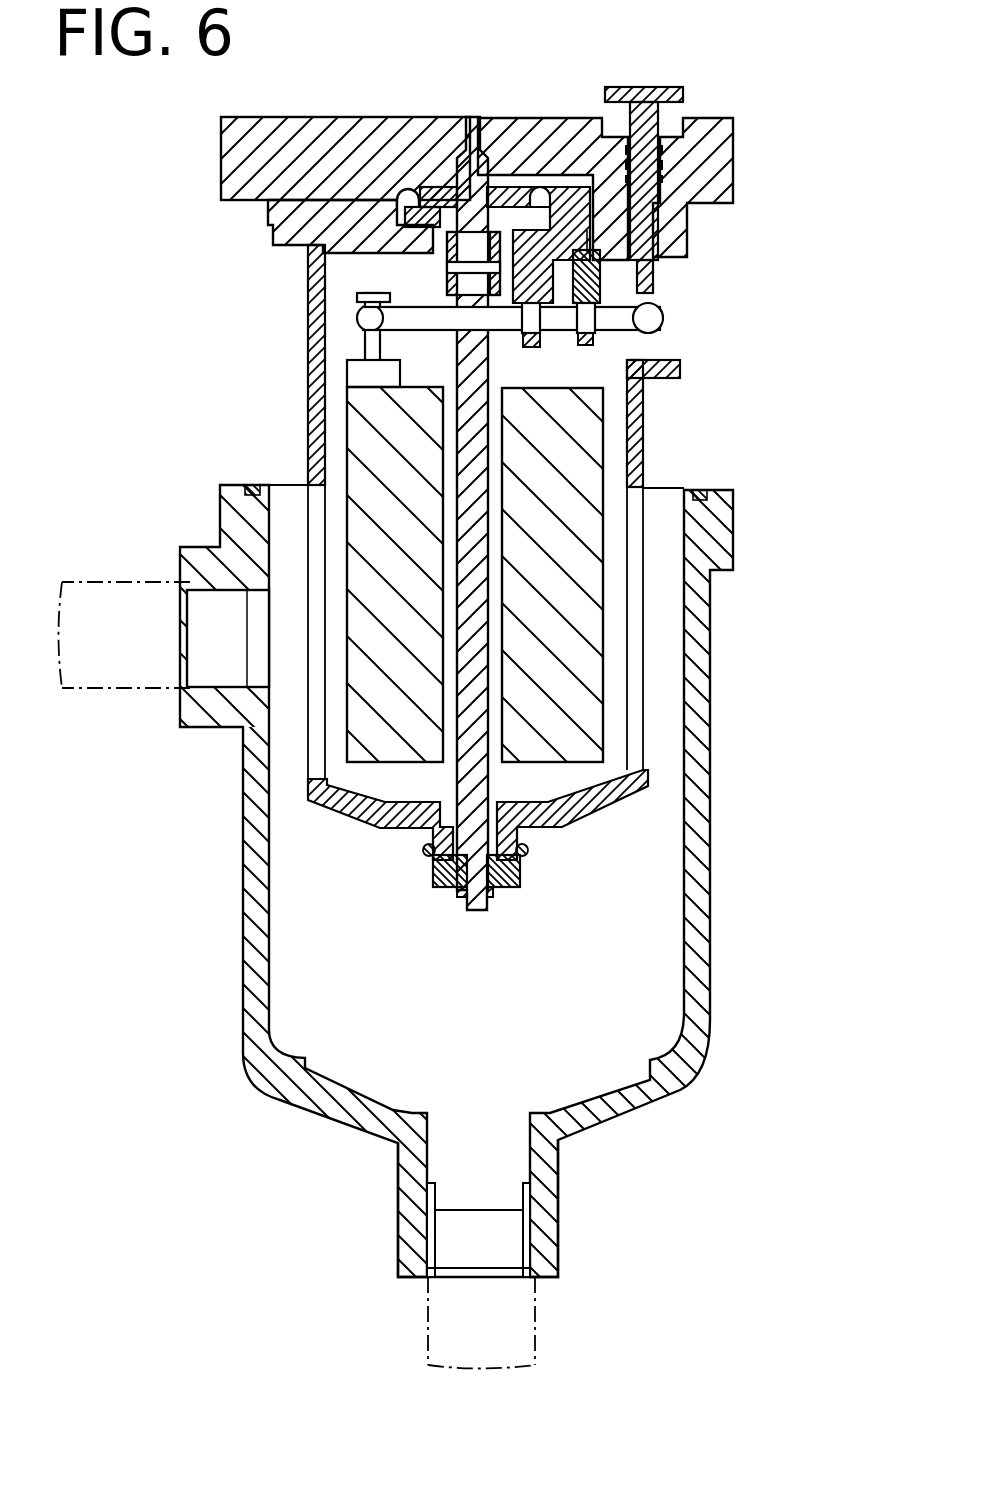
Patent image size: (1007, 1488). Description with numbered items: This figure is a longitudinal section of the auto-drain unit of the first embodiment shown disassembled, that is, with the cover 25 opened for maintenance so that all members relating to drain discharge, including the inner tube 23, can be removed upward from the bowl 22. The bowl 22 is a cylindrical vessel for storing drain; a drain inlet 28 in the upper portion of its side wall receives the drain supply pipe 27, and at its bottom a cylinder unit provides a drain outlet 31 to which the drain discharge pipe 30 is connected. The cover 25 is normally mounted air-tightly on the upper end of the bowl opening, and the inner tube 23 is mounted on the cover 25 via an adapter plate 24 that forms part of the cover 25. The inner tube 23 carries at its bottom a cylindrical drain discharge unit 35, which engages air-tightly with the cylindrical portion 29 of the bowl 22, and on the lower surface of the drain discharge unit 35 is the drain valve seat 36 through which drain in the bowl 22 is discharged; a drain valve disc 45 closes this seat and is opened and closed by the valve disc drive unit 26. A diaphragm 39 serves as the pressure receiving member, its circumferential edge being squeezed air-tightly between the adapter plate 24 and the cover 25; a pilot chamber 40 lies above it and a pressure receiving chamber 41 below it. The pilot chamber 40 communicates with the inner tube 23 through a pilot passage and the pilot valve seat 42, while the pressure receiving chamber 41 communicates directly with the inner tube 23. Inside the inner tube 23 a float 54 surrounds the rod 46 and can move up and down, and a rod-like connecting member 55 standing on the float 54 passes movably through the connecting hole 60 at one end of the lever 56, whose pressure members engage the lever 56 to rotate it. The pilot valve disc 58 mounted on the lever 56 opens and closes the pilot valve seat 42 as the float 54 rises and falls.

The bowl 22 is at (690, 893).
The inner tube 23 is at (308, 296).
The adapter plate 24 is at (300, 218).
The cover 25 is at (253, 135).
The valve disc drive unit 26 is at (460, 125).
The drain supply pipe 27 is at (125, 582).
The drain inlet 28 is at (200, 648).
The cylindrical portion 29 is at (548, 1168).
The drain discharge pipe 30 is at (535, 1312).
The drain outlet 31 is at (507, 1243).
The drain discharge unit 35 is at (428, 845).
The drain valve seat 36 is at (440, 862).
The diaphragm 39 is at (440, 190).
The pilot chamber 40 is at (518, 178).
The pressure receiving chamber 41 is at (397, 190).
The pilot valve seat 42 is at (643, 235).
The drain valve disc 45 is at (452, 896).
The rod 46 is at (470, 690).
The float 54 is at (568, 598).
The connecting member 55 is at (365, 346).
The lever 56 is at (660, 326).
The pilot valve disc 58 is at (600, 282).
The connecting hole 60 is at (250, 485).